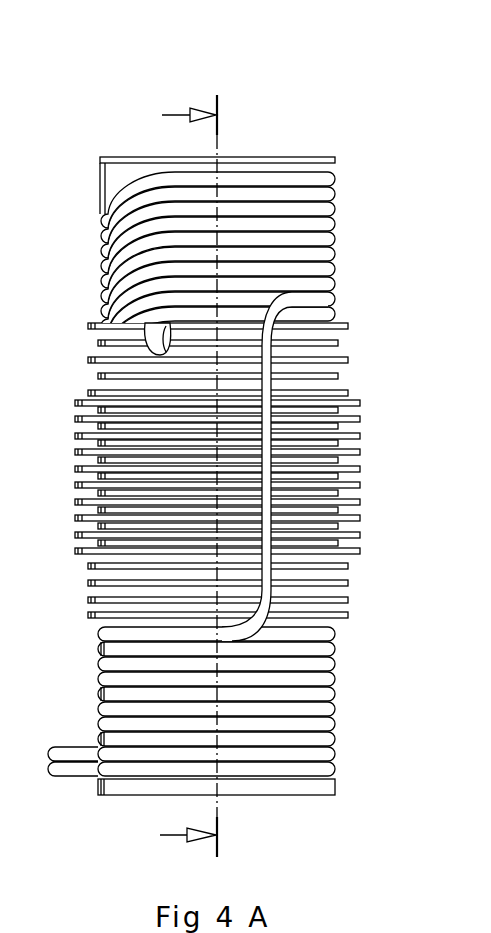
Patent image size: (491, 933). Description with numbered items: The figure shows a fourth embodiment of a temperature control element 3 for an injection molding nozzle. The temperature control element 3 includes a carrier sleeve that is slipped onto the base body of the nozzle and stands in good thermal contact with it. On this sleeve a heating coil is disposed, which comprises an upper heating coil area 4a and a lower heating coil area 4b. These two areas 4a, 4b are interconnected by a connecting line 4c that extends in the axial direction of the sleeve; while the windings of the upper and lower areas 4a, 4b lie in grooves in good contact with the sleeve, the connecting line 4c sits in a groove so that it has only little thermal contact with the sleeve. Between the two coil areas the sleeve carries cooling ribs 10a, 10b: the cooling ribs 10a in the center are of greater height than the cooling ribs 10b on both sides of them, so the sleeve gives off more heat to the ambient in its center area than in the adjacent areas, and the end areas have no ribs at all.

The temperature control element 3 is at (287, 128).
The upper heating coil area 4a is at (342, 173).
The lower heating coil area 4b is at (342, 643).
The connecting line 4c is at (260, 573).
The cooling ribs 10a is at (350, 488).
The cooling ribs 10b is at (340, 344).